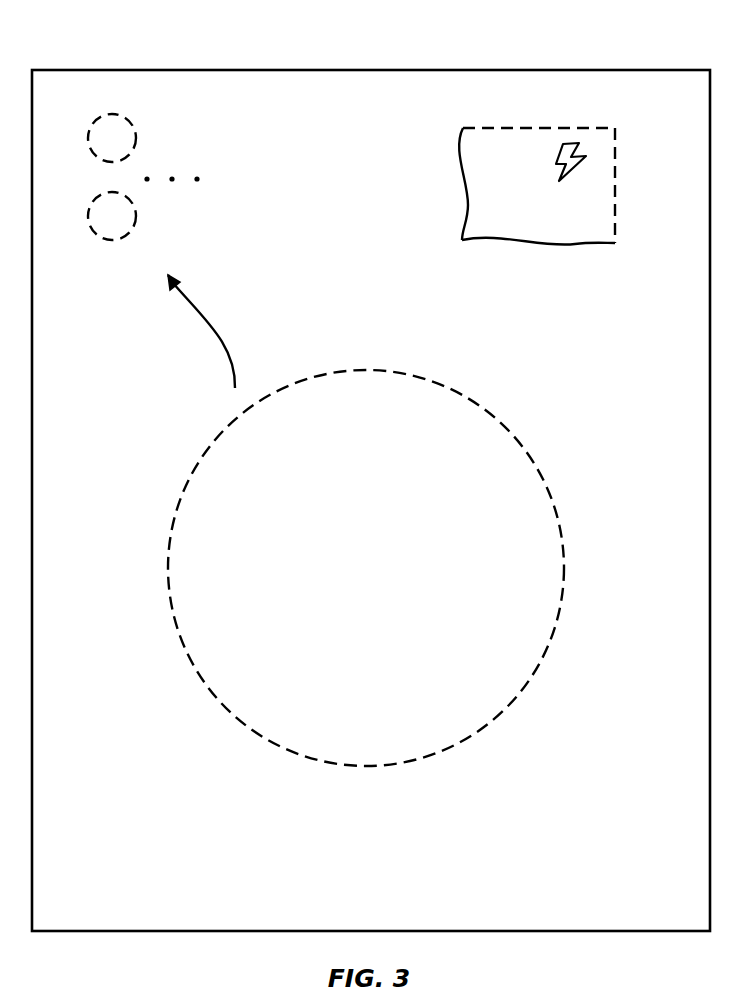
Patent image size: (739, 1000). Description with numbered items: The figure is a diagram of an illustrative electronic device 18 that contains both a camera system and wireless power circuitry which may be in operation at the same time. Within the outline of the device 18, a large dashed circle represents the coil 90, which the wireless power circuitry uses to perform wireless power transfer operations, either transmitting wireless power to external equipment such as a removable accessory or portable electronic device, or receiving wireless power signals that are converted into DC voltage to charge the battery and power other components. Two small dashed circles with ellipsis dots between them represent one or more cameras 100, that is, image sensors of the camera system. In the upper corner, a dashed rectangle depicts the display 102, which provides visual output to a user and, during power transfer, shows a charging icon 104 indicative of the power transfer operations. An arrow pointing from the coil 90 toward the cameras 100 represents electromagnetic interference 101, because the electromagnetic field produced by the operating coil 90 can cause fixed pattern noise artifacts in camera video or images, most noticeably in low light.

The device 18 is at (371, 70).
The coil 90 is at (361, 369).
The cameras 100 is at (112, 113).
The electromagnetic interference 101 is at (195, 313).
The display 102 is at (543, 128).
The icon 104 is at (570, 185).